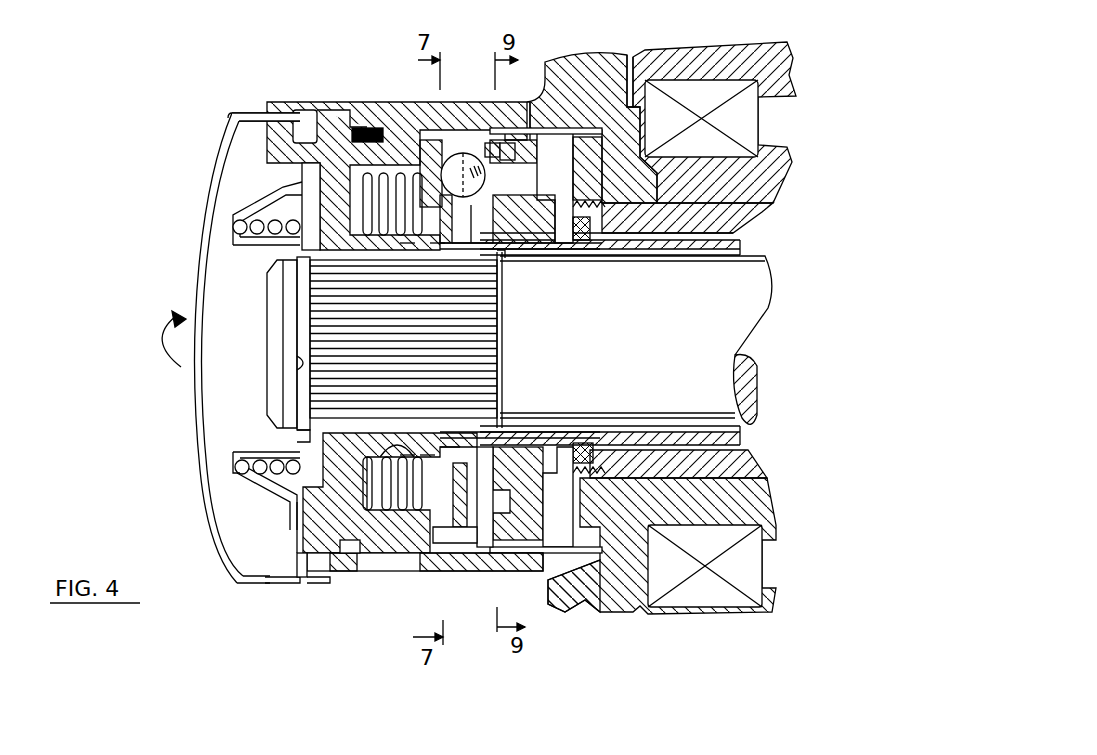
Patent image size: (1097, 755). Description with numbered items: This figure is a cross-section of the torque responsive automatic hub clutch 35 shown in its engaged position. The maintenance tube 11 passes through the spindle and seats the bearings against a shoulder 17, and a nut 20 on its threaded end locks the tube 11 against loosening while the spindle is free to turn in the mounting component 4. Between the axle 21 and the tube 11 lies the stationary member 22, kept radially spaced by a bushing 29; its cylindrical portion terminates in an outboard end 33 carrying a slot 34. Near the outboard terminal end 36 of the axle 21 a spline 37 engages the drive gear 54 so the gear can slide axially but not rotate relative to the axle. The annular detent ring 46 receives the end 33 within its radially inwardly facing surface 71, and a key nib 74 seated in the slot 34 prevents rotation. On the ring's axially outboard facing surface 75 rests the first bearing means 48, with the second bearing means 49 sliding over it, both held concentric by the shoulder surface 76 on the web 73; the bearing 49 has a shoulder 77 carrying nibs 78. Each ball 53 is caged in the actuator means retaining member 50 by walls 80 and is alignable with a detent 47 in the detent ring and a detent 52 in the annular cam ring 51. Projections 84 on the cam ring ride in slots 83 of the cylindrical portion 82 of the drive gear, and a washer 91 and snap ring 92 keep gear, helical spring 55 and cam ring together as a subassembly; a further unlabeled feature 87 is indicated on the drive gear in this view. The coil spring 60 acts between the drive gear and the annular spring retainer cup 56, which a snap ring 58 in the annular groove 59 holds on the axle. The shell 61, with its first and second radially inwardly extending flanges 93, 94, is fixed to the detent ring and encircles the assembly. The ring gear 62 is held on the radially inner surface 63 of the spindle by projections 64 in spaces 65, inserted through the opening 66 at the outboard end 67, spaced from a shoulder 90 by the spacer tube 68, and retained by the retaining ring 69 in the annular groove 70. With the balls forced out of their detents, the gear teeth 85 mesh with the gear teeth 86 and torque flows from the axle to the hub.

The mounting component 4 is at (735, 43).
The maintenance tube 11 is at (752, 210).
The shoulder 17 is at (757, 125).
The nut 20 is at (600, 505).
The axle 21 is at (760, 276).
The stationary member 22 is at (742, 247).
The bushing 29 is at (602, 207).
The outboard end 33 is at (502, 254).
The slot 34 is at (565, 437).
The automatic hub clutch 35 is at (370, 127).
The outboard terminal end 36 is at (263, 272).
The spline 37 is at (317, 302).
The annular detent ring 46 is at (542, 518).
The detent 47 is at (537, 250).
The first bearing means 48 is at (507, 553).
The second bearing means 49 is at (490, 163).
The actuator means retaining member 50 is at (463, 543).
The annular cam ring 51 is at (373, 127).
The detent 52 is at (420, 140).
The ball 53 is at (453, 153).
The drive gear 54 is at (342, 145).
The helical spring 55 is at (387, 535).
The annular spring retainer cup 56 is at (250, 200).
The snap ring 58 is at (297, 437).
The annular groove 59 is at (300, 363).
The coil spring 60 is at (250, 480).
The shell 61 is at (488, 547).
The ring gear 62 is at (310, 537).
The radially inner surface 63 is at (350, 572).
The projections 64 is at (307, 110).
The spaces 65 is at (409, 562).
The opening 66 is at (283, 586).
The outboard end 67 is at (265, 583).
The spacer tube 68 is at (582, 548).
The retaining ring 69 is at (258, 121).
The annular groove 70 is at (308, 580).
The radially inwardly facing surface 71 is at (563, 250).
The web 73 is at (546, 150).
The key nib 74 is at (527, 437).
The axially outboard facing surface 75 is at (543, 130).
The shoulder surface 76 is at (534, 187).
The shoulder 77 is at (527, 163).
The nibs 78 is at (490, 140).
The wall 80 is at (487, 198).
The cylindrical portion 82 is at (408, 250).
The slots 83 is at (405, 450).
The projections 84 is at (425, 450).
The gear teeth 85 is at (317, 188).
The gear teeth 86 is at (315, 152).
The passage 87 is at (440, 250).
The shoulder 90 is at (607, 133).
The washer 91 is at (440, 450).
The snap ring 92 is at (452, 447).
The first radially inwardly extending flange 93 is at (477, 542).
The second radially inwardly extending flange 94 is at (420, 540).